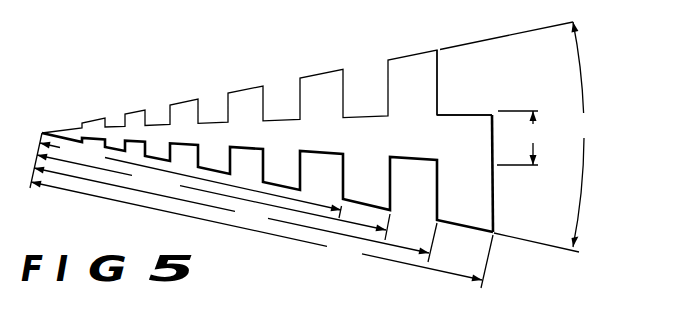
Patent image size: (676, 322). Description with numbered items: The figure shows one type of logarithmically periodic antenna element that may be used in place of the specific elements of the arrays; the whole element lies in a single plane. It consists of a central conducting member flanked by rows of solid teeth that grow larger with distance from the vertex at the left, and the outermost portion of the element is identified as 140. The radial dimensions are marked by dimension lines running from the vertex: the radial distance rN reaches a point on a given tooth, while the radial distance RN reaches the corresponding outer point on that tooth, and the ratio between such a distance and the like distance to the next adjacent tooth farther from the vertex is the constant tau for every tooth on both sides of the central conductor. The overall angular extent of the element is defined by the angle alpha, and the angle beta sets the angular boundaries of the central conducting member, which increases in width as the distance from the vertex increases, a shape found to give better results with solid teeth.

The outer end step of toothed profile 140 is at (448, 125).
The radial dimension rN is at (235, 214).
The radial dimension RN is at (262, 234).